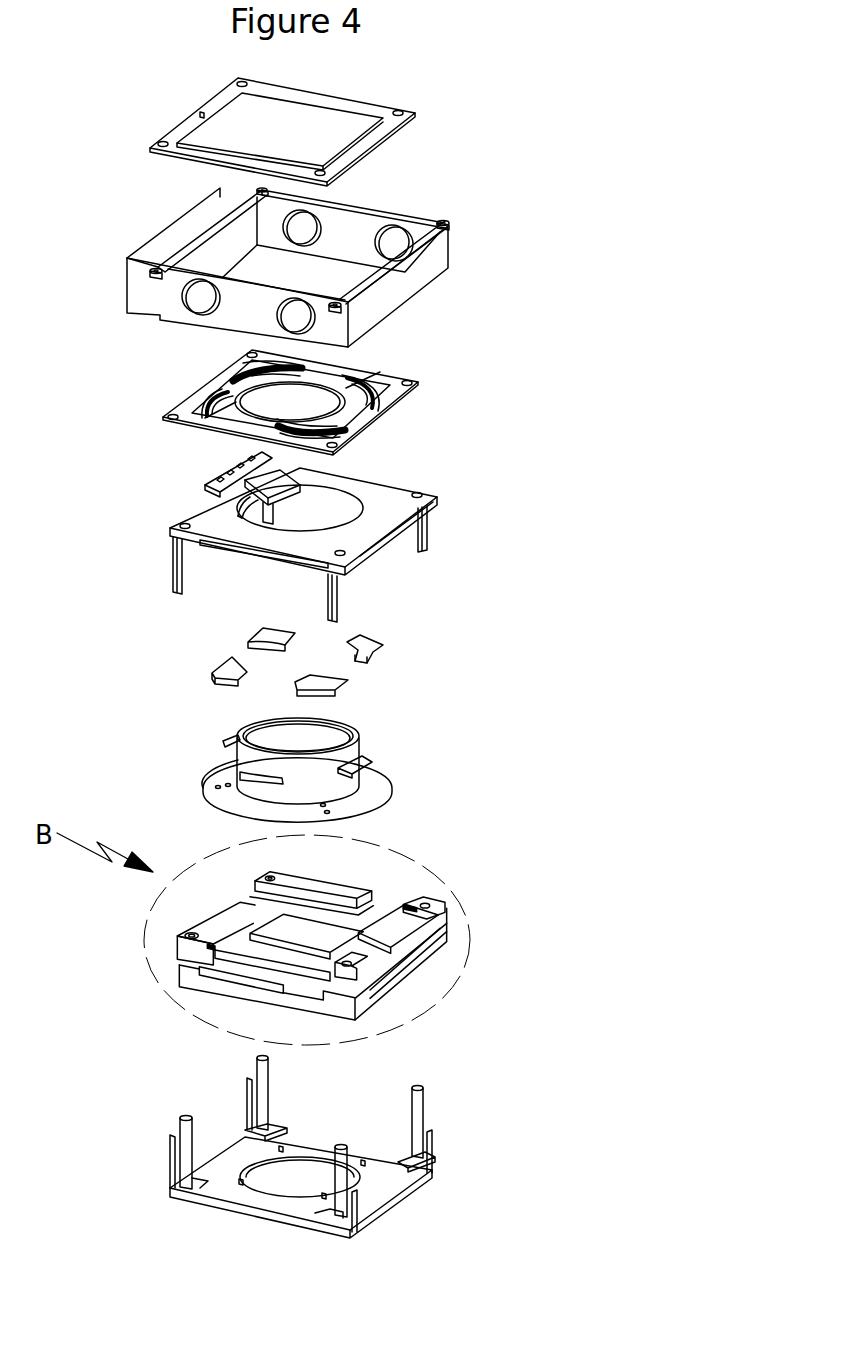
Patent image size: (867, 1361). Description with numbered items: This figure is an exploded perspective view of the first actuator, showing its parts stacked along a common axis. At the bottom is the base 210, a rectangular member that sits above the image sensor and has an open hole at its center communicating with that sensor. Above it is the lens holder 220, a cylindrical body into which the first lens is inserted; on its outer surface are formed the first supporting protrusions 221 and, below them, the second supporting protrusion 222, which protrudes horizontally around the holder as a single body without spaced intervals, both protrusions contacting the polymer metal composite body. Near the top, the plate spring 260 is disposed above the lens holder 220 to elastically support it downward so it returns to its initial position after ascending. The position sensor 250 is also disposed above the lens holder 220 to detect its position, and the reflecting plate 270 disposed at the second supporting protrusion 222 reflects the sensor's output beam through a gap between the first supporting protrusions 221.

The base 210 is at (383, 1180).
The lens holder 220 is at (276, 750).
The first supporting protrusions 221 is at (358, 763).
The second supporting protrusion 222 is at (368, 792).
The position sensor 250 is at (205, 482).
The plate spring 260 is at (393, 398).
The reflecting plate 270 is at (380, 640).